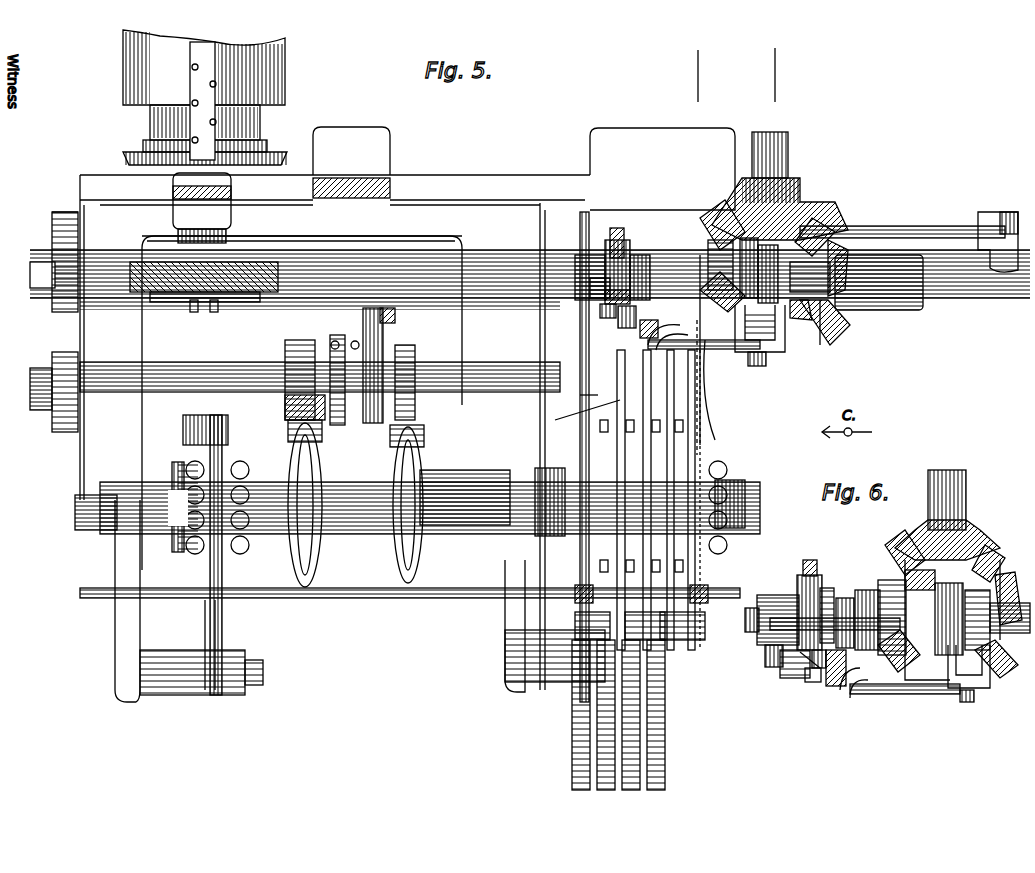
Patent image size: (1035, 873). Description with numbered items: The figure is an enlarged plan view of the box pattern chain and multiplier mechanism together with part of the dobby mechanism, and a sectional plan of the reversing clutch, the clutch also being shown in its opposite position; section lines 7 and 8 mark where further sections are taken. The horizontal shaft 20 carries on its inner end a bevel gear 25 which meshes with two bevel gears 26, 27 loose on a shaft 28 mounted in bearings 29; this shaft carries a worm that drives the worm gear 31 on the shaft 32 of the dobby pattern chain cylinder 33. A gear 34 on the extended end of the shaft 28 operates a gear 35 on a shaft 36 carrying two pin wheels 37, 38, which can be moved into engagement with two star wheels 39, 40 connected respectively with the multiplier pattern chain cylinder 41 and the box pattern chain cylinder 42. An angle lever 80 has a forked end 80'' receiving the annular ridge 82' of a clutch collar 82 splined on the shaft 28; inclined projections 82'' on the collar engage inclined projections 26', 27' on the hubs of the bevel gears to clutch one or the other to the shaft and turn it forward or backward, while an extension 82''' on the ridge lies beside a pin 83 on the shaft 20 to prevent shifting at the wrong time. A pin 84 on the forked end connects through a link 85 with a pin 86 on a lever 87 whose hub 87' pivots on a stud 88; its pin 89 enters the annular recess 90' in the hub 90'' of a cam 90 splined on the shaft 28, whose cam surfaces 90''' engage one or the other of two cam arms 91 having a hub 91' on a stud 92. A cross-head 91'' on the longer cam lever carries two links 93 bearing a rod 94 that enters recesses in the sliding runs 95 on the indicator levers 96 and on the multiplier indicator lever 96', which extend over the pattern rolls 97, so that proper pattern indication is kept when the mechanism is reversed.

In FIG. 5, the section line 7 7 is at (802, 208).
In FIG. 5, the section line 8 8 is at (716, 252).
In FIG. 5, the horizontal shaft 20 is at (778, 152).
In FIG. 6, the horizontal shaft 20 is at (955, 492).
In FIG. 5, the bevel gear 25 is at (795, 208).
In FIG. 6, the bevel gear 25 is at (972, 545).
In FIG. 5, the bevel gear 26 is at (712, 263).
In FIG. 6, the bevel gear 26 is at (861, 597).
In FIG. 5, the projection 26' is at (704, 248).
In FIG. 6, the projection 26' is at (882, 591).
In FIG. 5, the bevel gear 27 is at (837, 253).
In FIG. 6, the bevel gear 27 is at (1012, 605).
In FIG. 5, the projection 27' is at (837, 328).
In FIG. 6, the projection 27' is at (1000, 599).
In FIG. 5, the shaft 28 is at (330, 282).
In FIG. 6, the shaft 28 is at (785, 590).
In FIG. 5, the bearings 29 is at (905, 298).
In FIG. 5, the worm gear 31 is at (175, 300).
In FIG. 5, the shaft 32 is at (230, 214).
In FIG. 5, the dobby pattern chain cylinder 33 is at (268, 80).
In FIG. 5, the gear 34 is at (52, 232).
In FIG. 5, the gear 35 is at (57, 425).
In FIG. 5, the shaft 36 is at (232, 302).
In FIG. 5, the pin wheel 37 is at (292, 410).
In FIG. 5, the pin wheel 38 is at (372, 345).
In FIG. 5, the star wheel 39 is at (312, 550).
In FIG. 5, the star wheel 40 is at (405, 548).
In FIG. 5, the multiplier pattern chain cylinder 41 is at (248, 468).
In FIG. 5, the box pattern chain cylinder 42 is at (545, 552).
In FIG. 5, the angle lever 80 is at (909, 239).
In FIG. 5, the yoke-shaped or forked end 80'' is at (770, 338).
In FIG. 6, the yoke-shaped or forked end 80'' is at (984, 676).
In FIG. 5, the clutch collar 82 is at (782, 248).
In FIG. 6, the clutch collar 82 is at (905, 545).
In FIG. 5, the annular ridge 82' is at (848, 222).
In FIG. 6, the annular ridge 82' is at (1001, 555).
In FIG. 5, the projections 82'' is at (668, 337).
In FIG. 6, the projections 82'' is at (899, 651).
In FIG. 5, the extension 82''' is at (807, 310).
In FIG. 6, the extension 82''' is at (999, 664).
In FIG. 5, the pin 83 is at (762, 272).
In FIG. 6, the pin 83 is at (934, 612).
In FIG. 5, the pin 84 is at (762, 366).
In FIG. 6, the pin 84 is at (966, 702).
In FIG. 5, the link 85 is at (705, 350).
In FIG. 6, the link 85 is at (905, 692).
In FIG. 5, the pin 86 is at (660, 338).
In FIG. 6, the pin 86 is at (835, 688).
In FIG. 5, the lever 87 is at (613, 327).
In FIG. 6, the lever 87 is at (793, 701).
In FIG. 6, the hub 87' is at (787, 672).
In FIG. 6, the stud 88 is at (818, 655).
In FIG. 5, the pin 89 is at (608, 316).
In FIG. 6, the pin 89 is at (822, 670).
In FIG. 6, the cam 90 is at (810, 597).
In FIG. 5, the annular recess 90' is at (651, 261).
In FIG. 6, the annular recess 90' is at (849, 608).
In FIG. 5, the hub 90'' is at (587, 310).
In FIG. 5, the cam surfaces 90''' is at (577, 296).
In FIG. 5, the cam arms 91 is at (619, 253).
In FIG. 6, the cam arms 91 is at (786, 602).
In FIG. 6, the hub 91' is at (772, 607).
In FIG. 5, the cross-head 91'' is at (590, 264).
In FIG. 6, the stud 92 is at (750, 625).
In FIG. 5, the links 93 is at (650, 318).
In FIG. 5, the rod 94 is at (470, 598).
In FIG. 5, the sliding runs 95 is at (222, 444).
In FIG. 5, the indicator levers 96 is at (582, 418).
In FIG. 5, the indicator lever 96' is at (188, 645).
In FIG. 5, the pattern rolls or surfaces 97 is at (185, 542).